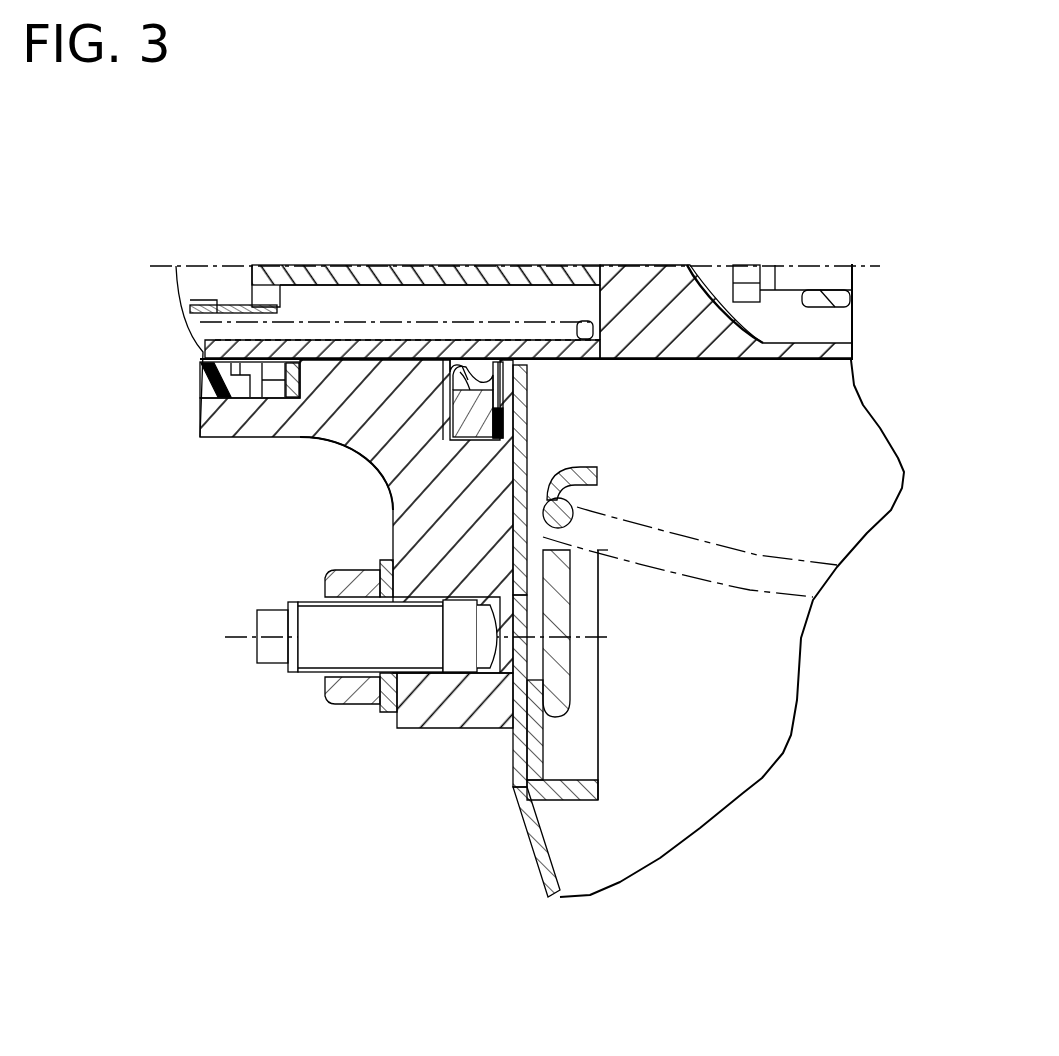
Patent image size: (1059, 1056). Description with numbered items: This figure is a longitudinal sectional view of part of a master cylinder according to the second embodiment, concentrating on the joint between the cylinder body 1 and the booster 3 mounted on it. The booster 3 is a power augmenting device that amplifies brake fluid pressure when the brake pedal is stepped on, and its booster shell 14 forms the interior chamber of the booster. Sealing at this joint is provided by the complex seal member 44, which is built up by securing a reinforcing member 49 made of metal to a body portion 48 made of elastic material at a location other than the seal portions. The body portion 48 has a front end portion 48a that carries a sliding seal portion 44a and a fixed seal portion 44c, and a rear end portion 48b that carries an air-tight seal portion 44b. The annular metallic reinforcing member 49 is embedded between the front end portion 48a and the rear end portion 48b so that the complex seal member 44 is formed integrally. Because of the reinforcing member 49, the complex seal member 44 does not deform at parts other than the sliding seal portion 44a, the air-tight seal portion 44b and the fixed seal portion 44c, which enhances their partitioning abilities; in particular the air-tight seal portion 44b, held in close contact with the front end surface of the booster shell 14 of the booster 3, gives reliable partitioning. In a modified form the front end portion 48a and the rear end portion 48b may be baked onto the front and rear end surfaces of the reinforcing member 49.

The cylinder body 1 is at (300, 425).
The booster 3 is at (527, 852).
The booster shell 14 is at (520, 800).
The complex seal member 44 is at (443, 417).
The sliding seal portion 44a is at (458, 380).
The air-tight seal portion 44b is at (523, 391).
The fixed seal portion 44c is at (397, 525).
The body portion 48 is at (448, 395).
The front end portion 48a is at (470, 383).
The rear end portion 48b is at (505, 418).
The reinforcing member 49 is at (497, 367).